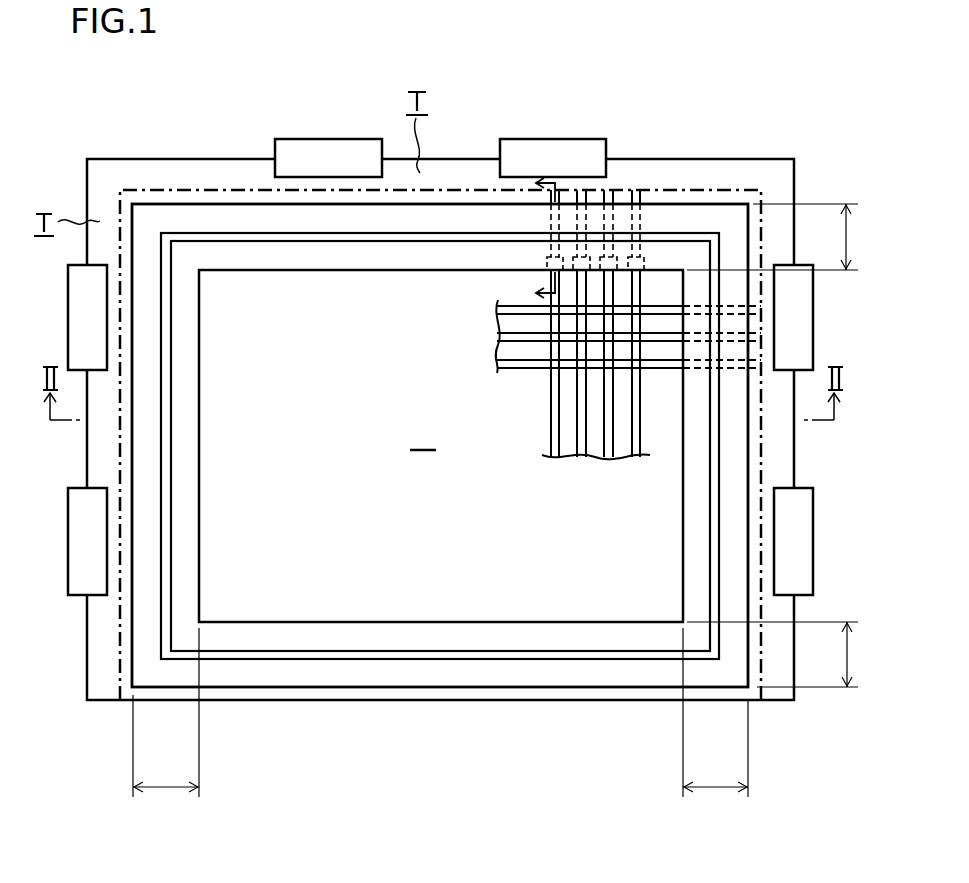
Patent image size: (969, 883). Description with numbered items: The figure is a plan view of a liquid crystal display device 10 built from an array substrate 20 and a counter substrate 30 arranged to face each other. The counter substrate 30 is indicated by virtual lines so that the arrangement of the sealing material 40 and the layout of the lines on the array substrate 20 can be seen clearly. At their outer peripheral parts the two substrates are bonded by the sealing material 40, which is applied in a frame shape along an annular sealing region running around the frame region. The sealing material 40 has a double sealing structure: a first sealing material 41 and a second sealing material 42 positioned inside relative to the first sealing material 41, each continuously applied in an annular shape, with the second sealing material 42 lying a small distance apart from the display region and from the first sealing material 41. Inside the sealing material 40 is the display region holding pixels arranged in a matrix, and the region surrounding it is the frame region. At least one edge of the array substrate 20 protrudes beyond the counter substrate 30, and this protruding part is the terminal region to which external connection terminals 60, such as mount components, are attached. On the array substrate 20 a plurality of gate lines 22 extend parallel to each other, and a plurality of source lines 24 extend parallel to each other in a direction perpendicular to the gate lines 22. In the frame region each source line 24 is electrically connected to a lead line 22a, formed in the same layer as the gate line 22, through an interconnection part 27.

The liquid crystal display device 10 is at (88, 120).
The array substrate 20 is at (158, 158).
The counter substrate 30 is at (243, 188).
The sealing material 40 is at (440, 504).
The first sealing material 41 is at (400, 674).
The second sealing material 42 is at (450, 640).
The external connection terminals 60 is at (330, 139).
The gate lines 22 is at (522, 370).
The lead line 22a is at (640, 218).
The source lines 24 is at (655, 403).
The interconnection part 27 is at (642, 258).